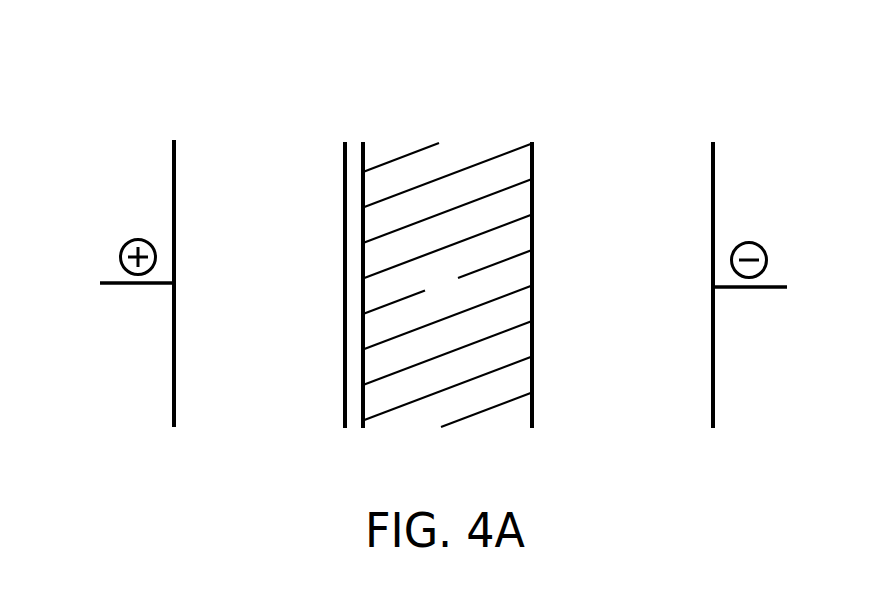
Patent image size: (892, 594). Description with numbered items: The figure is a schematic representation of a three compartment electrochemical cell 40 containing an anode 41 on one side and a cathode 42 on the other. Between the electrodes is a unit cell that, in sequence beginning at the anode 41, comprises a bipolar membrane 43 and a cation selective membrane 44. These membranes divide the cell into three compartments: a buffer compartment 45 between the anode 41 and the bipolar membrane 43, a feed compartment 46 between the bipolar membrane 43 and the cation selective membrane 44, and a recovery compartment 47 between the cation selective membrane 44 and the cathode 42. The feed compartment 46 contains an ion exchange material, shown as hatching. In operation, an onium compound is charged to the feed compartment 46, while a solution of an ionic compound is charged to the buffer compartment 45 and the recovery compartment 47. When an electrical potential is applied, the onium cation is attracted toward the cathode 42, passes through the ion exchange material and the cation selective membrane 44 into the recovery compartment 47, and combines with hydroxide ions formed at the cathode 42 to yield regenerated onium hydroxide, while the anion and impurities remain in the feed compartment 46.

The electrochemical cell 40 is at (151, 76).
The anode 41 is at (144, 269).
The cathode 42 is at (742, 270).
The bipolar membrane 43 is at (353, 292).
The cation selective membrane 44 is at (532, 292).
The buffer compartment 45 is at (264, 285).
The feed compartment 46 is at (447, 285).
The recovery compartment 47 is at (622, 287).